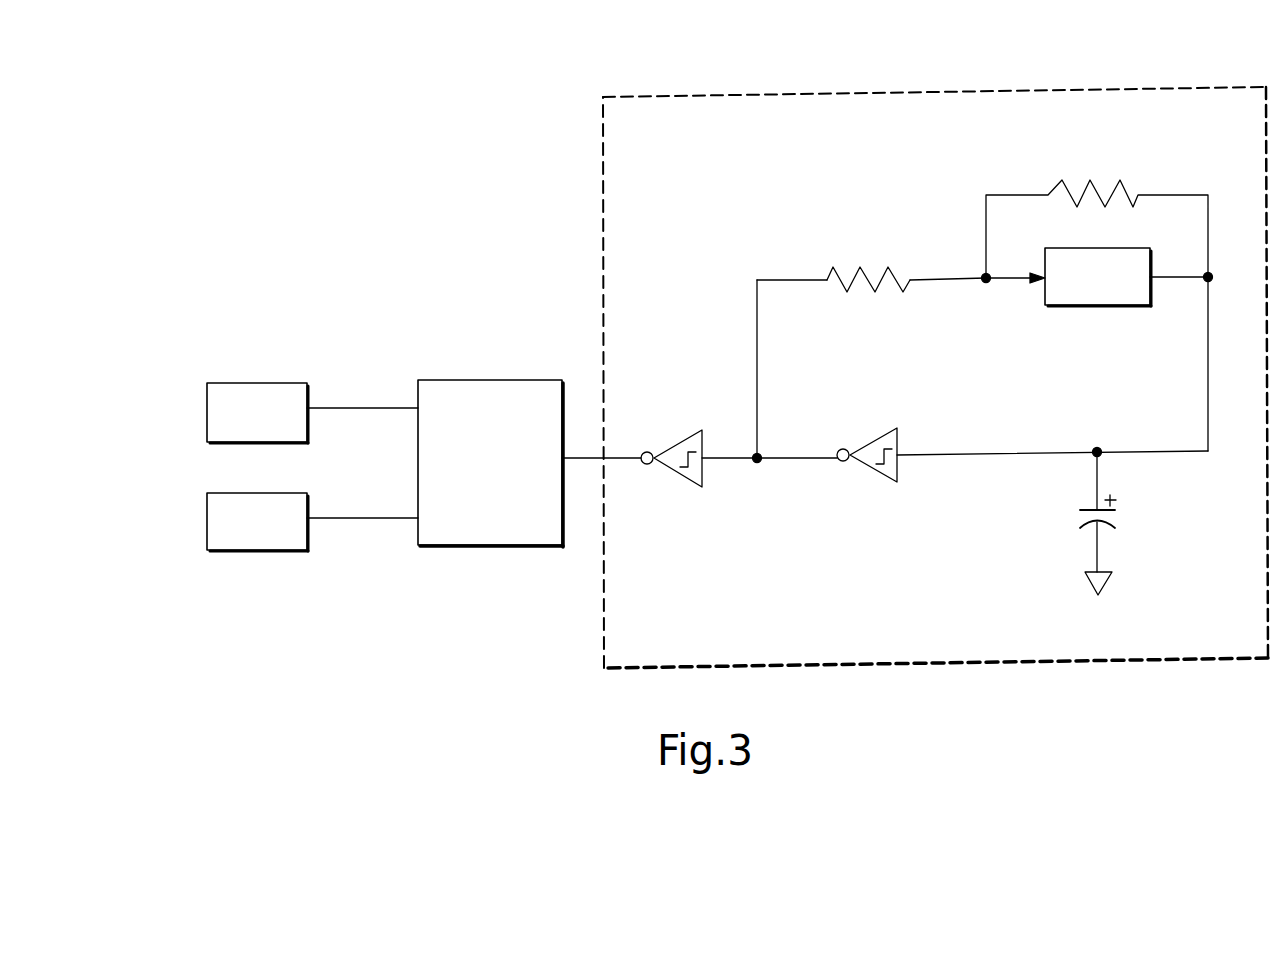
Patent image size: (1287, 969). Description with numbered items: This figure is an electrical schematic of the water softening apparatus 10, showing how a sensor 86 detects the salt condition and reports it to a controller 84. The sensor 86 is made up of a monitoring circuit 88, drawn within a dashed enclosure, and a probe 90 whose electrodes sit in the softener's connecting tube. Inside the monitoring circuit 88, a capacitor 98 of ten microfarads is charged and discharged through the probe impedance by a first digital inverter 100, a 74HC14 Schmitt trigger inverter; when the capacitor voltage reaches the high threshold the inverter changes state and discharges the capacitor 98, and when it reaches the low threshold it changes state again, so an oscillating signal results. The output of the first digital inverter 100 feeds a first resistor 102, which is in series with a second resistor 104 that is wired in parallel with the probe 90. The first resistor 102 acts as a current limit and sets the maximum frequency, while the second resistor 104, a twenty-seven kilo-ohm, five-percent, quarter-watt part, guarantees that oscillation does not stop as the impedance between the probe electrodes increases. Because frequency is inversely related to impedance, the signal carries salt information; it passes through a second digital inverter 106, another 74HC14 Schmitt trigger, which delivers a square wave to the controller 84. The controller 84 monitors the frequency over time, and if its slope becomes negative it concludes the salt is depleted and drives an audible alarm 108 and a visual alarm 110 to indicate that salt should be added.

The water softening apparatus 10 is at (603, 57).
The controller 84 is at (496, 390).
The sensor 86 is at (768, 88).
The monitoring circuit 88 is at (734, 229).
The probe 90 is at (1055, 300).
The capacitor 98 is at (1088, 508).
The first digital inverter 100 is at (892, 475).
The first resistor 102 is at (880, 283).
The second resistor 104 is at (1120, 185).
The second digital inverter 106 is at (697, 477).
The audible alarm 108 is at (207, 424).
The visual alarm 110 is at (207, 534).